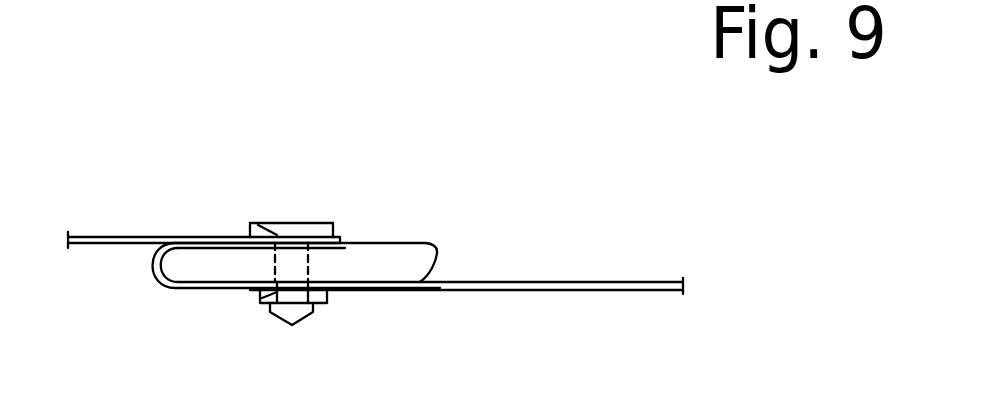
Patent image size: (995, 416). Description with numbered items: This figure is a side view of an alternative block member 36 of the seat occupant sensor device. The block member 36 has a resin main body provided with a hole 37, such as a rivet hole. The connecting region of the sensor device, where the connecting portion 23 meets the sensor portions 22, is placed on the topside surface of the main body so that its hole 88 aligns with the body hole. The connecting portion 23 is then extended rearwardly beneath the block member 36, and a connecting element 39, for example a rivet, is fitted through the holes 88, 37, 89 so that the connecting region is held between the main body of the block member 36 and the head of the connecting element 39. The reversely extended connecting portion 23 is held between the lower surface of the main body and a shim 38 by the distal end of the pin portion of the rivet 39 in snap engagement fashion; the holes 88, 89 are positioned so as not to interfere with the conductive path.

The sensor portion 22 is at (118, 237).
The connecting portion 23 is at (636, 282).
The block member 36 is at (437, 251).
The hole 37 is at (312, 262).
The shim 38 is at (325, 303).
The connecting element 39 is at (320, 223).
The hole 88 is at (262, 226).
The hole 89 is at (262, 298).